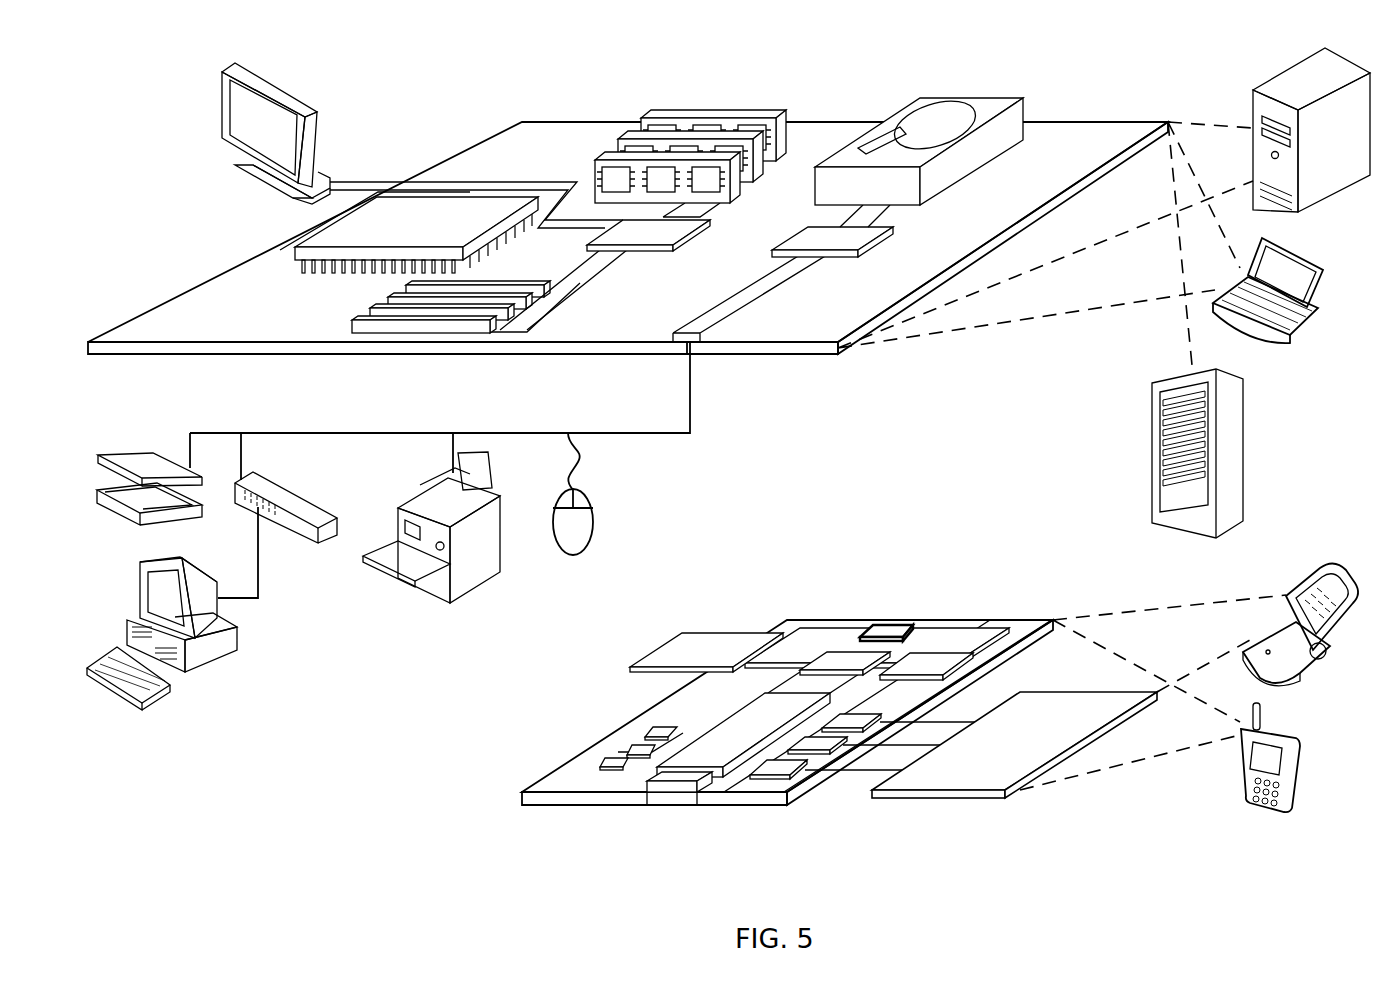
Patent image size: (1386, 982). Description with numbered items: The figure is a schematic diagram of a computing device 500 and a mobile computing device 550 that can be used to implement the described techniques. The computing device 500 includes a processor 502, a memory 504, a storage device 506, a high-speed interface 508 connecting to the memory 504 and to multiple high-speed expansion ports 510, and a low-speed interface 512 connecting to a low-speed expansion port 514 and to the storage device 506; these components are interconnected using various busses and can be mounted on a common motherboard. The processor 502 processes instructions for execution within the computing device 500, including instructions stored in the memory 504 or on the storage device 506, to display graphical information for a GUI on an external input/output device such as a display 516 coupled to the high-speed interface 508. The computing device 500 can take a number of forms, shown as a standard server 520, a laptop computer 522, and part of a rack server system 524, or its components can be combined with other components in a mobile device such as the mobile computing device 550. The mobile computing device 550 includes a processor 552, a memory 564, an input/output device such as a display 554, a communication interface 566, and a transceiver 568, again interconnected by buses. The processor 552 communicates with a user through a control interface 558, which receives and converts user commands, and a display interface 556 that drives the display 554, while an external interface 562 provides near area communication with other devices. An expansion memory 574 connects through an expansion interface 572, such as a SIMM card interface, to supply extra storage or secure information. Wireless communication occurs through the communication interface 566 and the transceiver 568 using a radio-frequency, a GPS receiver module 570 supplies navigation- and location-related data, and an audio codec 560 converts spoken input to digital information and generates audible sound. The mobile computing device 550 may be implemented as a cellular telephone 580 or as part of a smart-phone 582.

The computing device 500 is at (436, 90).
The processor 502 is at (295, 250).
The memory 504 is at (650, 110).
The storage device 506 is at (917, 99).
The high-speed interface 508 is at (623, 232).
The high-speed expansion ports 510 is at (370, 312).
The low-speed interface 512 is at (813, 237).
The low-speed expansion port 514 is at (697, 343).
The display 516 is at (223, 66).
The standard server 520 is at (1252, 108).
The laptop computer 522 is at (1325, 270).
The rack server system 524 is at (1152, 478).
The mobile computing device 550 is at (494, 807).
The processor 552 is at (713, 758).
The display 554 is at (968, 777).
The display interface 556 is at (790, 780).
The control interface 558 is at (820, 750).
The audio codec 560 is at (850, 722).
The external interface 562 is at (677, 793).
The memory 564 is at (618, 748).
The communication interface 566 is at (843, 663).
The transceiver 568 is at (927, 658).
The GPS receiver module 570 is at (898, 622).
The expansion interface 572 is at (767, 630).
The expansion memory 574 is at (685, 631).
The cellular telephone 580 is at (1304, 573).
The smart-phone 582 is at (1240, 766).